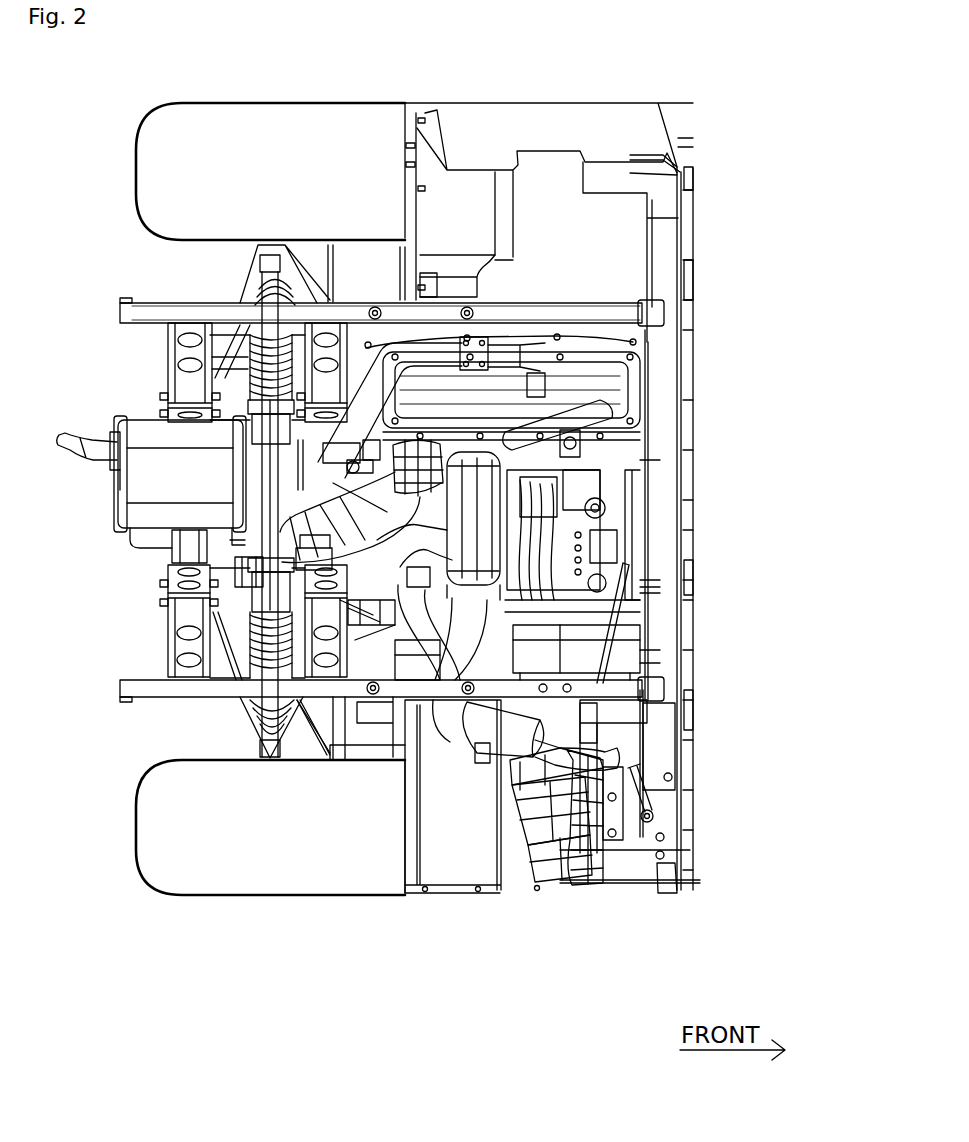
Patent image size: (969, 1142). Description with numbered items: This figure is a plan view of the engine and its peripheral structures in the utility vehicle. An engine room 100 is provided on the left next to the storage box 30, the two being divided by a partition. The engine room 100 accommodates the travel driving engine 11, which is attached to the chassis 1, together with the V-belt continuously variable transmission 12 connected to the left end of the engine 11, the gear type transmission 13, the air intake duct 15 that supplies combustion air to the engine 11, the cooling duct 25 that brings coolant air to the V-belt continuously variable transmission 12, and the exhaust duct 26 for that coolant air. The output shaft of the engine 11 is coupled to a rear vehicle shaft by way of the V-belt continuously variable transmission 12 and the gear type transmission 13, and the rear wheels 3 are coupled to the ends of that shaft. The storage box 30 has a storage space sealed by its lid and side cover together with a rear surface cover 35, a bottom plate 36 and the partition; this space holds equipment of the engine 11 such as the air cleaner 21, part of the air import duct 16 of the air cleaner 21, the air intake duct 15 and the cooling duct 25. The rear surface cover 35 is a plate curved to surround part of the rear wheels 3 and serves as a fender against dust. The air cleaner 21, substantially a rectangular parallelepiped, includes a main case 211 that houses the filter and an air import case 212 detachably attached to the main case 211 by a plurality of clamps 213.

The chassis 1 is at (627, 293).
The rear wheels 3 is at (178, 891).
The travel driving engine 11 is at (570, 512).
The V-belt continuously variable transmission 12 is at (518, 390).
The gear type transmission 13 is at (312, 470).
The air intake duct 15 is at (545, 648).
The air import duct 16 is at (603, 755).
The air cleaner 21 is at (472, 901).
The main case 211 is at (507, 768).
The air import case 212 is at (530, 836).
The clamps 213 is at (507, 802).
The cooling duct 25 is at (370, 612).
The exhaust duct 26 is at (350, 558).
The storage box 30 is at (640, 771).
The rear surface cover 35 is at (443, 856).
The bottom plate 36 is at (543, 882).
The engine room 100 is at (637, 453).